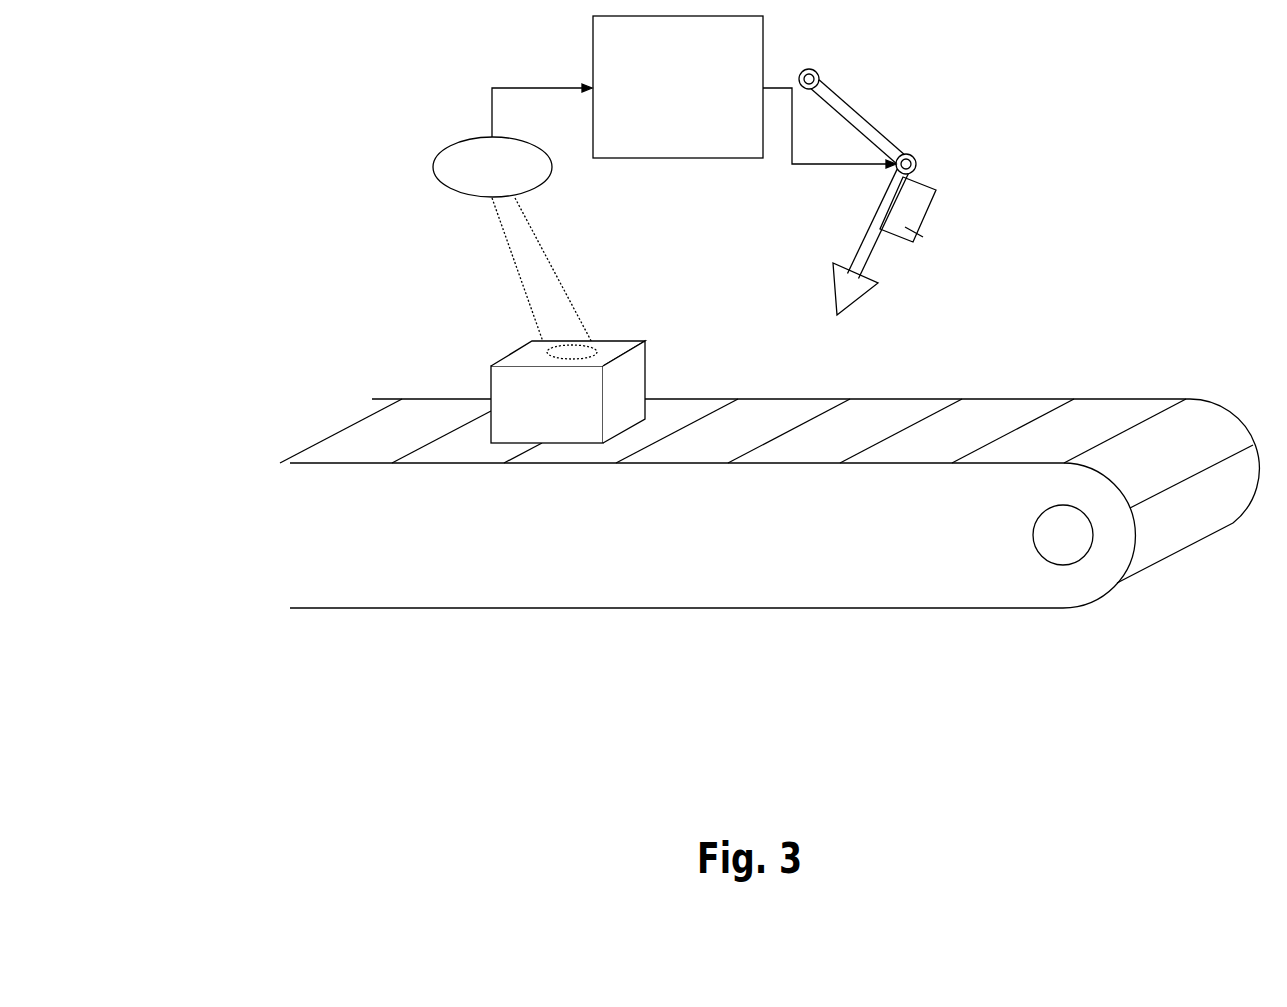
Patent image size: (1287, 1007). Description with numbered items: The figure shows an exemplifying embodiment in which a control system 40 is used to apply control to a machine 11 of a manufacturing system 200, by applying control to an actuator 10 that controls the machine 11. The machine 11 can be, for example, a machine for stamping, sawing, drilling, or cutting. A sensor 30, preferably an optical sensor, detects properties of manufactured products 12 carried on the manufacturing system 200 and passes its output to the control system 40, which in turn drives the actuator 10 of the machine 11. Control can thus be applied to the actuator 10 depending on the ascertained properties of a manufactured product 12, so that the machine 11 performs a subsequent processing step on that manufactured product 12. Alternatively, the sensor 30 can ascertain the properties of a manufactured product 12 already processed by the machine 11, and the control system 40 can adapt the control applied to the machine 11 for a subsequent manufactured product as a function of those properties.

The control system 40 is at (578, 25).
The sensor 30 is at (432, 170).
The machine 11 is at (875, 132).
The actuator 10 is at (932, 207).
The manufactured product 12 is at (652, 372).
The manufacturing system 200 is at (663, 610).